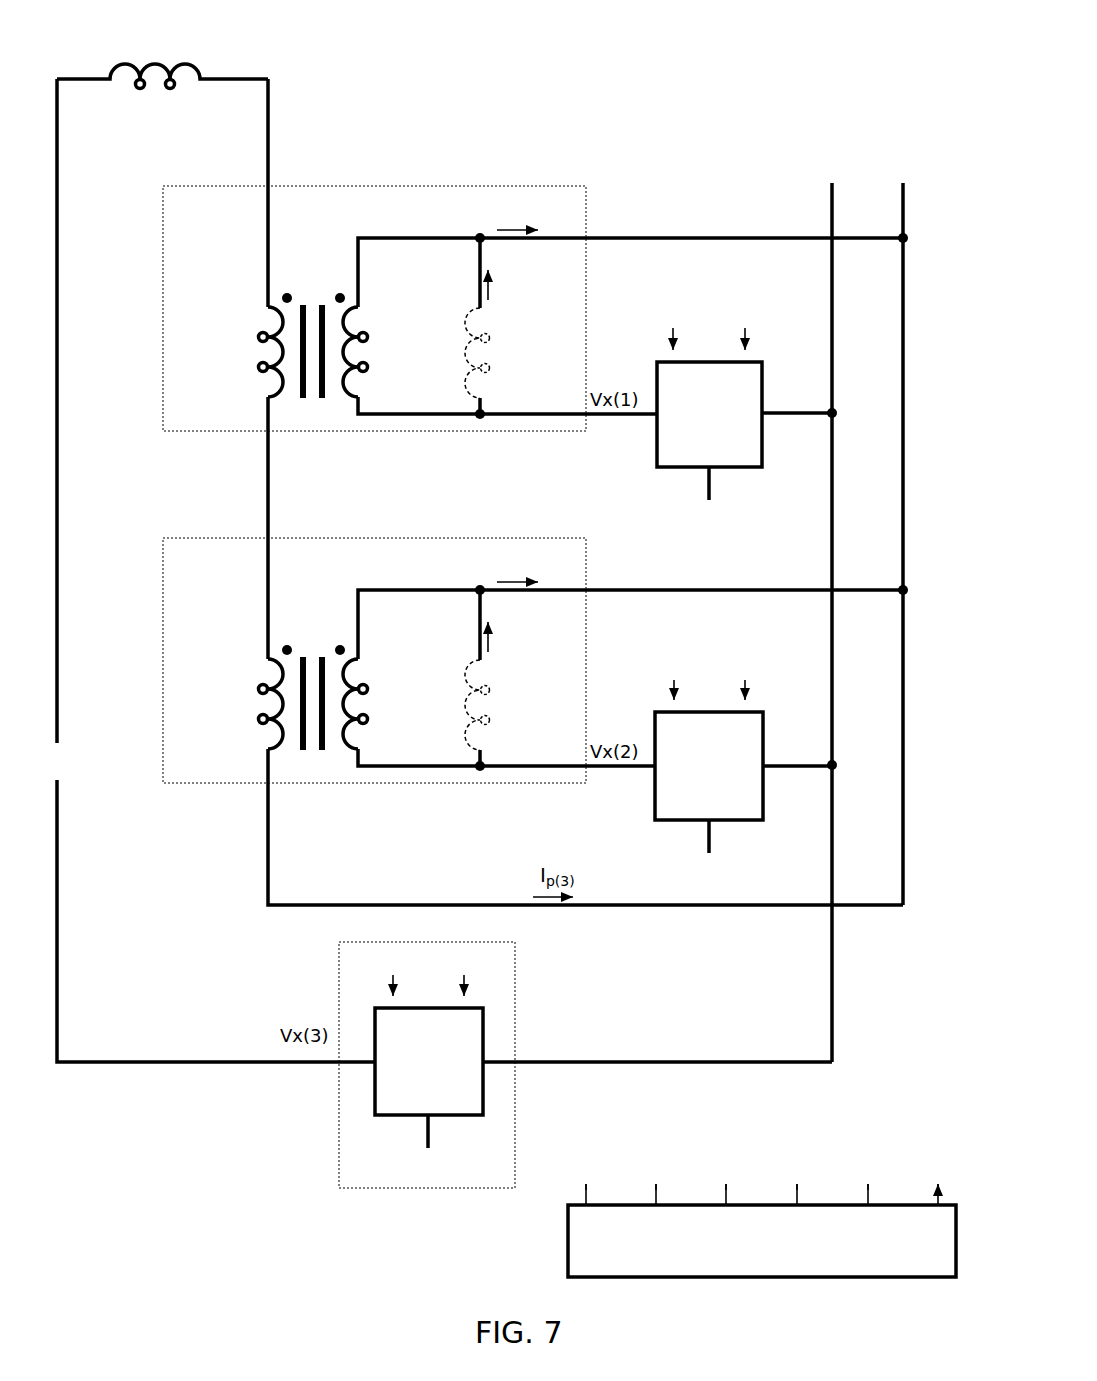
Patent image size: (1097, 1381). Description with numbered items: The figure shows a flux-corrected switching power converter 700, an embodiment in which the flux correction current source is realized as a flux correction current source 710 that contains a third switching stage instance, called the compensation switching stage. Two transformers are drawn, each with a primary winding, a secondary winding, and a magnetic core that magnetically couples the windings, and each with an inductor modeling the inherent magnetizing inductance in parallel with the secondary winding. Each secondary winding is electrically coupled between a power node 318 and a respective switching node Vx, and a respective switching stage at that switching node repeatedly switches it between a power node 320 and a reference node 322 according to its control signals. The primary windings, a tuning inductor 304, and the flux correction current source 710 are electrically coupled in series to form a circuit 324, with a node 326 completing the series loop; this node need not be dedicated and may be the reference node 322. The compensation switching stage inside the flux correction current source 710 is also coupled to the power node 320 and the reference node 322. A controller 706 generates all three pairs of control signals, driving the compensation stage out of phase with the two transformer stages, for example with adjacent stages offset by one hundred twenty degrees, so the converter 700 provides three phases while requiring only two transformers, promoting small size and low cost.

The flux-corrected switching power converter 700 is at (870, 50).
The tuning inductor 304 is at (152, 50).
The circuit 324 is at (280, 70).
The node 326 is at (208, 570).
The power node 320 is at (832, 610).
The power node 318 is at (899, 531).
The reference node 322 is at (569, 822).
The flux correction current source 710 is at (516, 990).
The controller 706 is at (812, 1255).